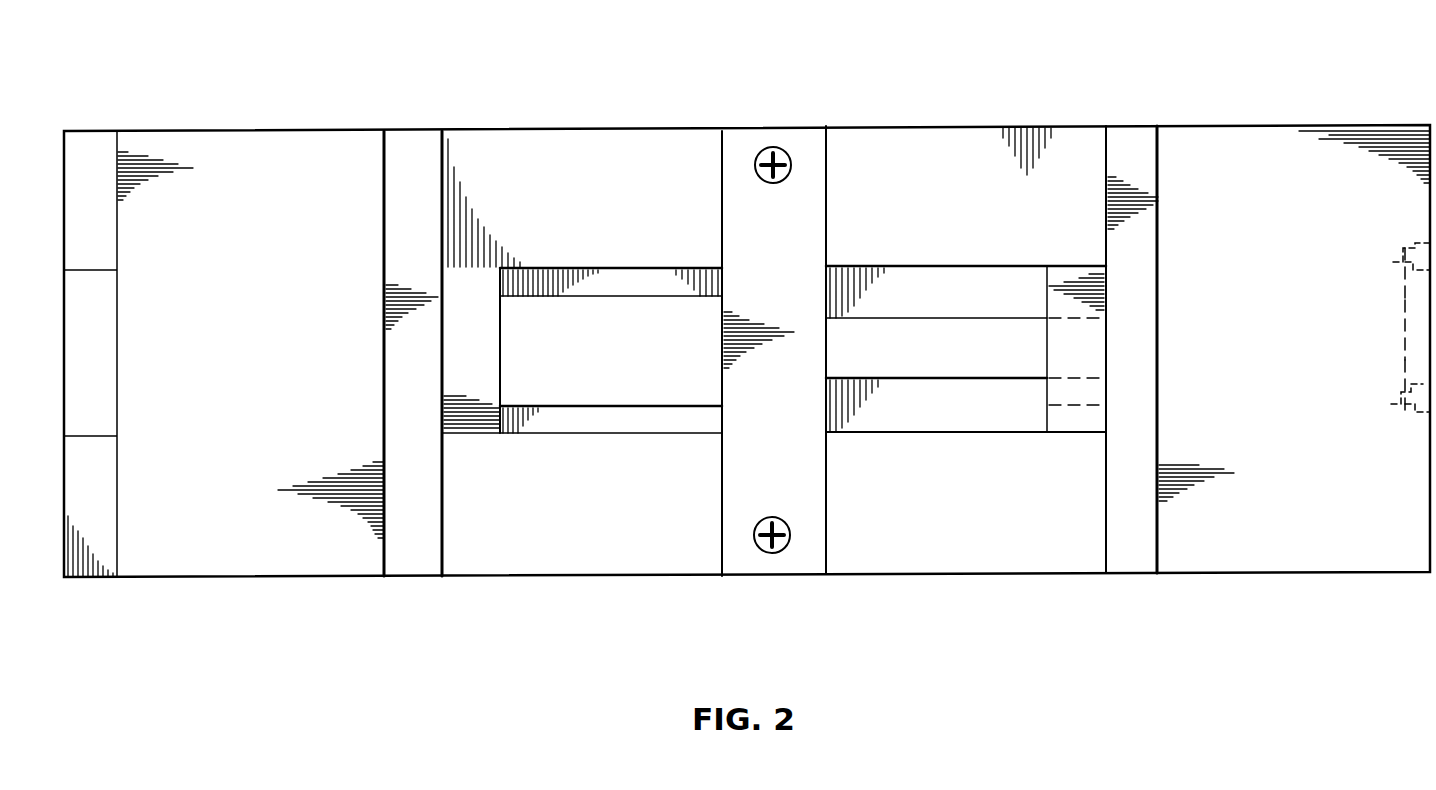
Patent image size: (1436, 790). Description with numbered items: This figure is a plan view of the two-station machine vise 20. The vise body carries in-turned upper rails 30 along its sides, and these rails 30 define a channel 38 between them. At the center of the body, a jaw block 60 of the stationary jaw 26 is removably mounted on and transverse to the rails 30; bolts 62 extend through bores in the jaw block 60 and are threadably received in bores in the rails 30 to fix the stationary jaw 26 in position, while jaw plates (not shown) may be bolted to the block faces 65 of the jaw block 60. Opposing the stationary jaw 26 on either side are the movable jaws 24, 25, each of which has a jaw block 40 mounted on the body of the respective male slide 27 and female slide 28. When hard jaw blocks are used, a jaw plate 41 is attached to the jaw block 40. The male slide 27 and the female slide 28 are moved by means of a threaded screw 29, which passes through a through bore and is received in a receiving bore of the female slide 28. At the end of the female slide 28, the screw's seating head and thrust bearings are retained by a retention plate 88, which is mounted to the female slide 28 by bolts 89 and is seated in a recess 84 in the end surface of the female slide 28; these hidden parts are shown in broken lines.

The two-station machine vise 20 is at (968, 105).
The movable jaw 24 is at (212, 124).
The movable jaw 25 is at (1283, 112).
The stationary jaw 26 is at (760, 124).
The male slide 27 is at (475, 413).
The female slide 28 is at (1070, 278).
The threaded screw 29 is at (862, 353).
The upper rails 30 is at (592, 165).
The channel 38 is at (930, 392).
The jaw block 40 is at (1285, 540).
The jaw plate 41 is at (1130, 555).
The jaw block 60 is at (806, 148).
The bolts 62 is at (772, 542).
The block faces 65 is at (721, 190).
The recess 84 is at (1405, 412).
The retention plate 88 is at (1402, 348).
The bolts 89 is at (1395, 262).